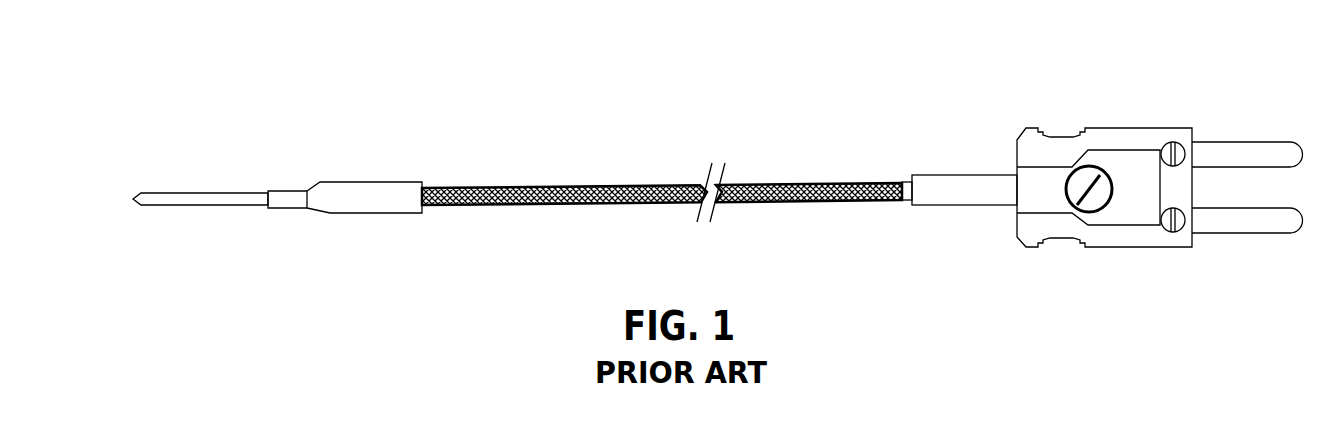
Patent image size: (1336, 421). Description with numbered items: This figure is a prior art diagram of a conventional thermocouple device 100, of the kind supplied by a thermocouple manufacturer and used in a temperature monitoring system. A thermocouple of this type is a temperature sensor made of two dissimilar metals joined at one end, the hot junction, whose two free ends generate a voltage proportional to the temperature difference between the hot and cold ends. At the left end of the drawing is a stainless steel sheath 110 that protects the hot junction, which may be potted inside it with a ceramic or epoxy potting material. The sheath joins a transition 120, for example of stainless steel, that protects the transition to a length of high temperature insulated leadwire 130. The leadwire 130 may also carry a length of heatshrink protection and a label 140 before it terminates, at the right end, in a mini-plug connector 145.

The thermocouple device 100 is at (224, 64).
The stainless steel sheath 110 is at (193, 193).
The transition 120 is at (373, 182).
The high temperature insulated leadwire 130 is at (580, 187).
The label 140 is at (935, 175).
The mini-plug connector 145 is at (1160, 128).